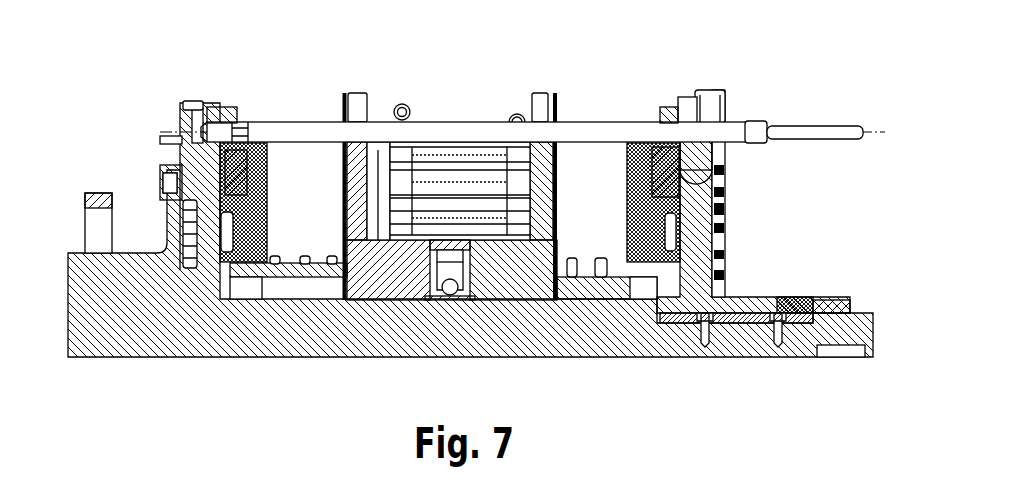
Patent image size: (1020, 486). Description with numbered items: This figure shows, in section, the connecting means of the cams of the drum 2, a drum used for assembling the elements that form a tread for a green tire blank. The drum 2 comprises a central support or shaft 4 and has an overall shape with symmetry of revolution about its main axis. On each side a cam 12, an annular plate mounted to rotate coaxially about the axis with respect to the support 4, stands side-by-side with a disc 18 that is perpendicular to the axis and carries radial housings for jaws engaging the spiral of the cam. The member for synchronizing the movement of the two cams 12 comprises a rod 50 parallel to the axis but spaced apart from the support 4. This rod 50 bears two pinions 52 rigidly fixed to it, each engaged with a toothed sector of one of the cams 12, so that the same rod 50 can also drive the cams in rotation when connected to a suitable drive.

The drum 2 is at (760, 86).
The central support or shaft 4 is at (158, 330).
The cam 12 is at (218, 177).
The disc 18 is at (263, 157).
The rod 50 is at (476, 127).
The pinions 52 is at (232, 112).